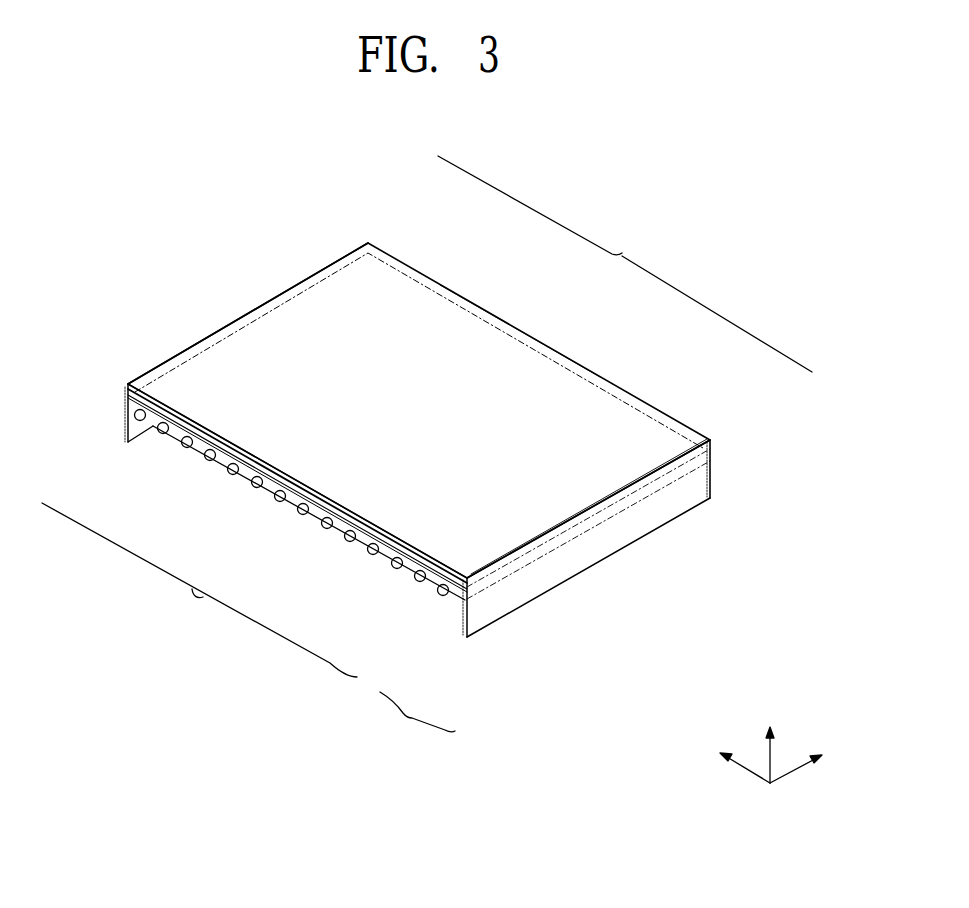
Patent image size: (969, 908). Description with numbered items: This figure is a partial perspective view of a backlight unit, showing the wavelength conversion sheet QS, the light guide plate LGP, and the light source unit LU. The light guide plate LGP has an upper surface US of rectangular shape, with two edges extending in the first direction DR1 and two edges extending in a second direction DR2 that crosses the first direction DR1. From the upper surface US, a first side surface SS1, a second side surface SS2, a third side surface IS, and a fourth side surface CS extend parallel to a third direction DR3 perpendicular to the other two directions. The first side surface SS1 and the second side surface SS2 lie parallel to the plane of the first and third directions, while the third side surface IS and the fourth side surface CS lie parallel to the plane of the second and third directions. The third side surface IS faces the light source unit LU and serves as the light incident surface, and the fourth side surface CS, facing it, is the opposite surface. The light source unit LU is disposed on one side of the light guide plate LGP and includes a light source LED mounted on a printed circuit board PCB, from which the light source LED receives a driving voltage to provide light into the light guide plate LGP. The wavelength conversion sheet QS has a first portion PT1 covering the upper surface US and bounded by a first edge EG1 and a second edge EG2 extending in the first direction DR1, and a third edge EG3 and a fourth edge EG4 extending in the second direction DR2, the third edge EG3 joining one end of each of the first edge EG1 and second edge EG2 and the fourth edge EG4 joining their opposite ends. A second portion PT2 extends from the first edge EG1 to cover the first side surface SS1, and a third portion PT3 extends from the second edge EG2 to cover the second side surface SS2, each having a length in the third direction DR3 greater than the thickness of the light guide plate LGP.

The upper surface US is at (318, 477).
The wavelength conversion sheet QS is at (625, 264).
The fourth side surface CS is at (571, 368).
The first portion PT1 is at (537, 347).
The second portion PT2 is at (354, 259).
The third portion PT3 is at (702, 487).
The first edge EG1 is at (238, 320).
The second edge EG2 is at (613, 497).
The third edge EG3 is at (683, 425).
The fourth edge EG4 is at (183, 412).
The first side surface SS1 is at (168, 367).
The second side surface SS2 is at (485, 584).
The third side surface IS is at (217, 457).
The light guide plate LGP is at (199, 590).
The light source LED is at (416, 563).
The printed circuit board PCB is at (449, 592).
The light source unit LU is at (417, 717).
The first direction DR1 is at (814, 761).
The second direction DR2 is at (725, 761).
The third direction DR3 is at (770, 741).